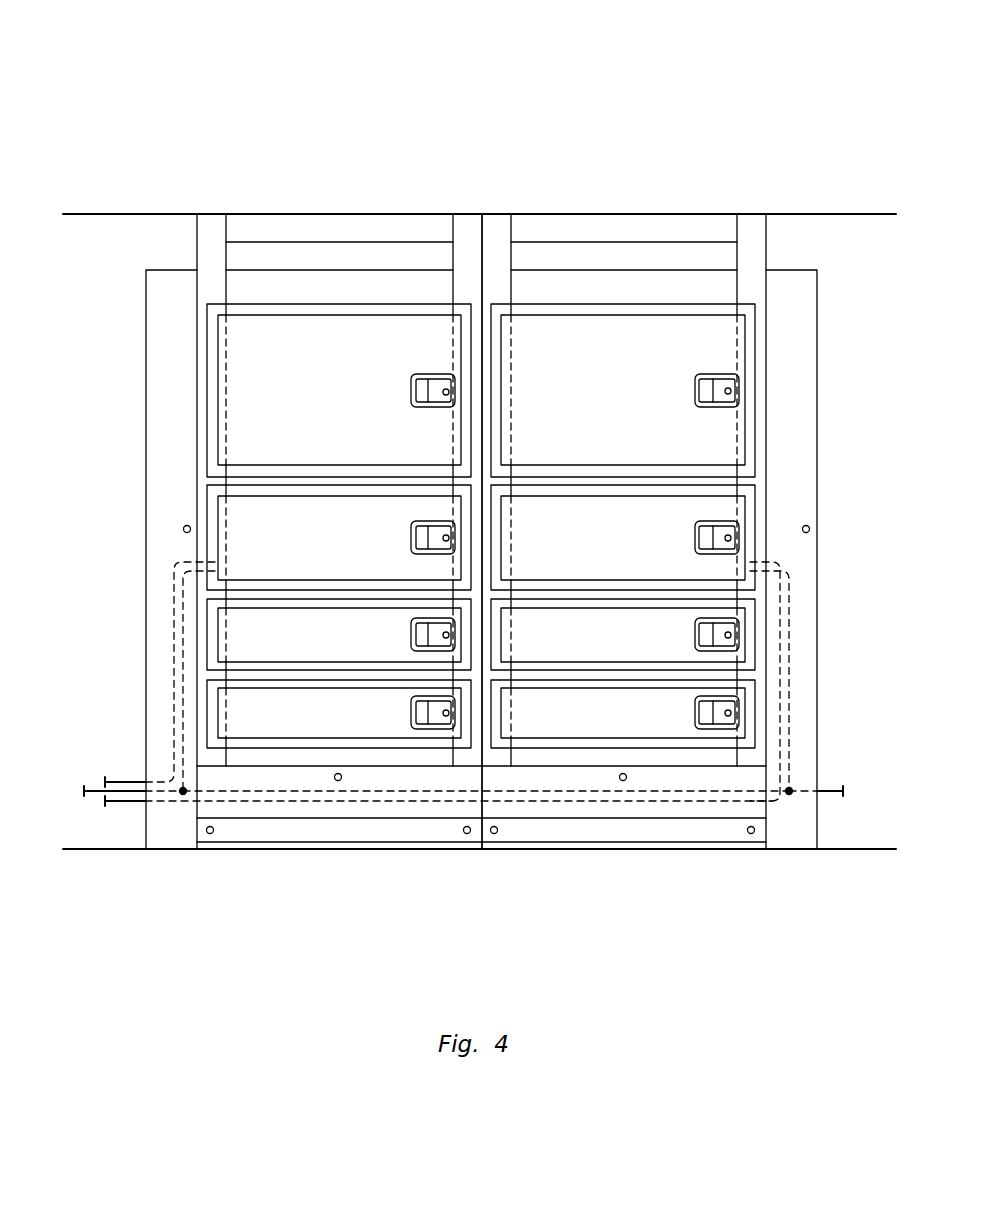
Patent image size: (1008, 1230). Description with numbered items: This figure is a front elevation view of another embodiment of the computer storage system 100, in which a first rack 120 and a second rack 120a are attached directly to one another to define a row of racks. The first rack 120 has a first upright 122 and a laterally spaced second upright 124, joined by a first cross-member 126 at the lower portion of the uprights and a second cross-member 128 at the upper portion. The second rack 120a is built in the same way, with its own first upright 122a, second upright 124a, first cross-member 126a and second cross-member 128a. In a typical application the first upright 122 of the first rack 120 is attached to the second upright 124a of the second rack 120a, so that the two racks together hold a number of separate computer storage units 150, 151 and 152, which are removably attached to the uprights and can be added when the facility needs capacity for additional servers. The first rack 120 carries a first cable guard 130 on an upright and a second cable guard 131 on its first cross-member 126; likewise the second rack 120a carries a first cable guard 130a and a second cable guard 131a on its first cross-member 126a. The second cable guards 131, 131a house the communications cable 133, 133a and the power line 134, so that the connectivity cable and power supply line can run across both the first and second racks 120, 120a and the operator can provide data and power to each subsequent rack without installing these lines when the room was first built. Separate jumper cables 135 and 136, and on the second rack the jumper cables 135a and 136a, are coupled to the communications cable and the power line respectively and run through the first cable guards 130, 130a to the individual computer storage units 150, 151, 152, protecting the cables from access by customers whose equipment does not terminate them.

The computer storage system 100 is at (552, 113).
The first rack 120 is at (320, 186).
The second rack 120a is at (633, 186).
The first upright 122 is at (468, 214).
The first upright of the second rack 122a is at (760, 214).
The second upright 124 is at (210, 214).
The second upright of the second rack 124a is at (498, 214).
The first cross-member 126 is at (240, 833).
The first cross-member of the second rack 126a is at (667, 828).
The second cross-member 128 is at (373, 248).
The second cross-member of the second rack 128a is at (684, 248).
The first cable guard 130 is at (161, 328).
The first cable guard of the second rack 130a is at (806, 328).
The second cable guard 131 is at (320, 808).
The second cable guard of the second rack 131a is at (560, 810).
The communications cable 133 is at (132, 782).
The communications cable of the second rack 133a is at (722, 800).
The power line 134 is at (400, 790).
The jumper cable 135 is at (183, 630).
The jumper cable of the second rack 135a is at (789, 636).
The jumper cable 136 is at (174, 582).
The jumper cable of the second rack 136a is at (790, 600).
The computer storage unit 150 is at (247, 543).
The computer storage unit 151 is at (235, 633).
The computer storage unit 152 is at (240, 392).